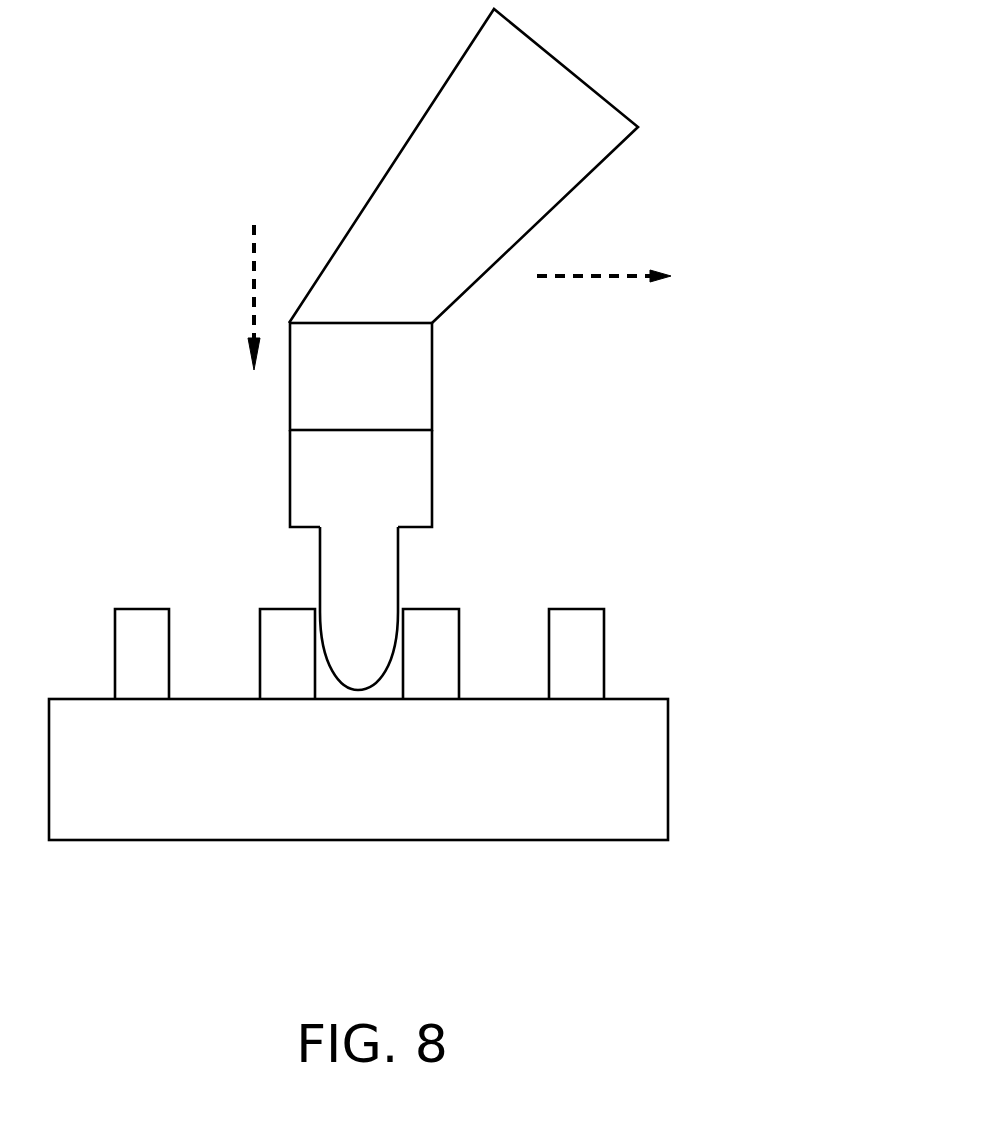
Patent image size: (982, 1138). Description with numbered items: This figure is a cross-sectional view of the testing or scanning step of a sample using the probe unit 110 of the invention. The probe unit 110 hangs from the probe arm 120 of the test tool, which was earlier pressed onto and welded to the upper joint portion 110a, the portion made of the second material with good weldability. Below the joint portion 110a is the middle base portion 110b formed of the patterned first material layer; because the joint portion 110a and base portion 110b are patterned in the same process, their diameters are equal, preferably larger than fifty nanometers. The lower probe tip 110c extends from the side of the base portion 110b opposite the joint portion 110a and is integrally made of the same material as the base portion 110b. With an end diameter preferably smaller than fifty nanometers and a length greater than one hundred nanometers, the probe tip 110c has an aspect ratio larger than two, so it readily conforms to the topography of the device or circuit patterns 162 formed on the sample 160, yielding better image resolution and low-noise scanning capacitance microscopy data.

The probe unit 110 is at (446, 506).
The joint portion 110a is at (328, 391).
The base portion 110b is at (328, 487).
The probe tip 110c is at (331, 586).
The probe arm 120 is at (434, 218).
The sample 160 is at (653, 767).
The device or circuit patterns 162 is at (590, 655).